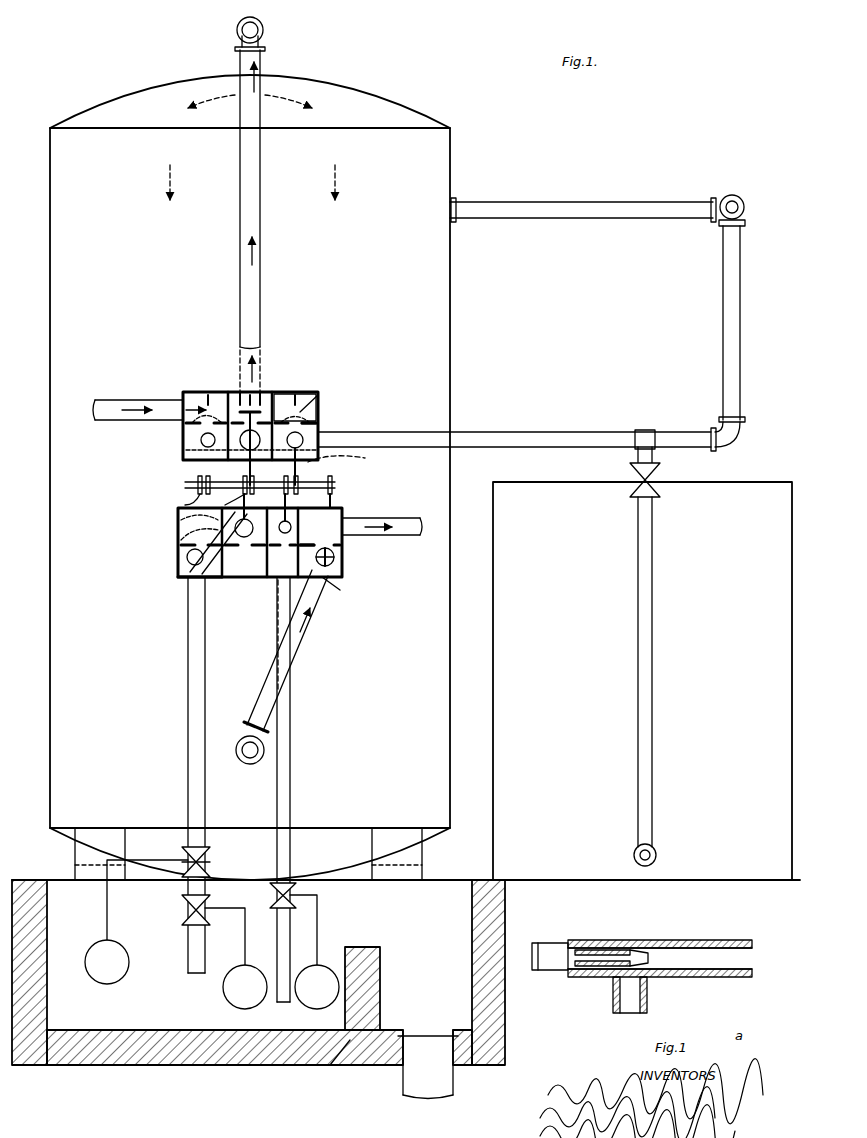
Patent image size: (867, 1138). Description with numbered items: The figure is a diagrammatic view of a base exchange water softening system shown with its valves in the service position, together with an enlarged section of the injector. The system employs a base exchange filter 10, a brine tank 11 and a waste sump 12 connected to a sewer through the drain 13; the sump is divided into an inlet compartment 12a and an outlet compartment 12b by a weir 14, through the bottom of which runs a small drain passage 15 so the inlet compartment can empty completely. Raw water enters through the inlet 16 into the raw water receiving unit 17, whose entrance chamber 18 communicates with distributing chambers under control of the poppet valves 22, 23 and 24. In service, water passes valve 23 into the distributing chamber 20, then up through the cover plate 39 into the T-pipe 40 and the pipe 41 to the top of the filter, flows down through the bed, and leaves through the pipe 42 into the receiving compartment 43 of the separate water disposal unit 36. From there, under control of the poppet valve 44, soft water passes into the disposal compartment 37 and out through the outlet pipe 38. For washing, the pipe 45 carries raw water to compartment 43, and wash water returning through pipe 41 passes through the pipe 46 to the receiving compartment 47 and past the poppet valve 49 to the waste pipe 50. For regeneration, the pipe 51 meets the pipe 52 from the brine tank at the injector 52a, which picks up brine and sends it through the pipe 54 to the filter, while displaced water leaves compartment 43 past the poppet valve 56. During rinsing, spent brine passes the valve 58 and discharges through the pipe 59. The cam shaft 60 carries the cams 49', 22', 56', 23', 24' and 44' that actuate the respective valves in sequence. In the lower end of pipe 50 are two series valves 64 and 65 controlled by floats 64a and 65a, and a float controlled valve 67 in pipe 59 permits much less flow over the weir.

In FIG. 1, the base exchange filter 10 is at (237, 477).
In FIG. 1, the brine tank 11 is at (642, 681).
In FIG. 1, the waste sump 12 is at (505, 925).
In FIG. 1, the inlet compartment 12a is at (259, 955).
In FIG. 1, the outlet compartment 12b is at (426, 988).
In FIG. 1, the drain 13 is at (402, 1082).
In FIG. 1, the weir 14 is at (380, 962).
In FIG. 1, the drain passage 15 is at (331, 1066).
In FIG. 1, the inlet 16 is at (105, 392).
In FIG. 1, the raw water receiving unit 17 is at (183, 389).
In FIG. 1, the entrance chamber 18 is at (318, 395).
In FIG. 1, the distributing chamber 20 is at (190, 448).
In FIG. 1, the poppet valve 22 is at (185, 428).
In FIG. 1, the cam 22' is at (179, 523).
In FIG. 1, the poppet valve 23 is at (268, 403).
In FIG. 1, the cam 23' is at (216, 448).
In FIG. 1, the poppet valve 24 is at (330, 422).
In FIG. 1, the cam 24' is at (315, 446).
In FIG. 1, the water disposal unit 36 is at (320, 508).
In FIG. 1, the disposal compartment 37 is at (334, 548).
In FIG. 1, the outlet pipe 38 is at (405, 538).
In FIG. 1, the cover plate 39 is at (319, 410).
In FIG. 1, the T-pipe 40 is at (295, 407).
In FIG. 1, the pipe 41 is at (261, 185).
In FIG. 1, the pipe 42 is at (305, 620).
In FIG. 1, the receiving compartment 43 is at (340, 590).
In FIG. 1, the poppet valve 44 is at (338, 560).
In FIG. 1, the cam 44' is at (345, 497).
In FIG. 1, the pipe 45 is at (348, 457).
In FIG. 1, the pipe 46 is at (181, 530).
In FIG. 1, the receiving compartment 47 is at (185, 578).
In FIG. 1, the poppet valve 49 is at (169, 557).
In FIG. 1, the cam 49' is at (168, 503).
In FIG. 1, the pipe 50 is at (187, 697).
In FIG. 1, the pipe 51 is at (200, 440).
In FIG. 1, the pipe 52 is at (653, 600).
In FIG. 1A, the pipe 52 is at (612, 1000).
In FIG. 1, the injector 52a is at (645, 428).
In FIG. 1A, the injector 52a is at (620, 940).
In FIG. 1, the pipe 54 is at (606, 195).
In FIG. 1A, the pipe 54 is at (560, 936).
In FIG. 1, the poppet valve 56 is at (241, 547).
In FIG. 1, the cam 56' is at (226, 496).
In FIG. 1, the valve 58 is at (292, 456).
In FIG. 1, the pipe 59 is at (291, 730).
In FIG. 1, the cam shaft 60 is at (185, 485).
In FIG. 1, the valve 64 is at (212, 860).
In FIG. 1, the float 64a is at (98, 970).
In FIG. 1, the valve 65 is at (180, 908).
In FIG. 1, the float 65a is at (224, 1003).
In FIG. 1, the valve 67 is at (268, 895).